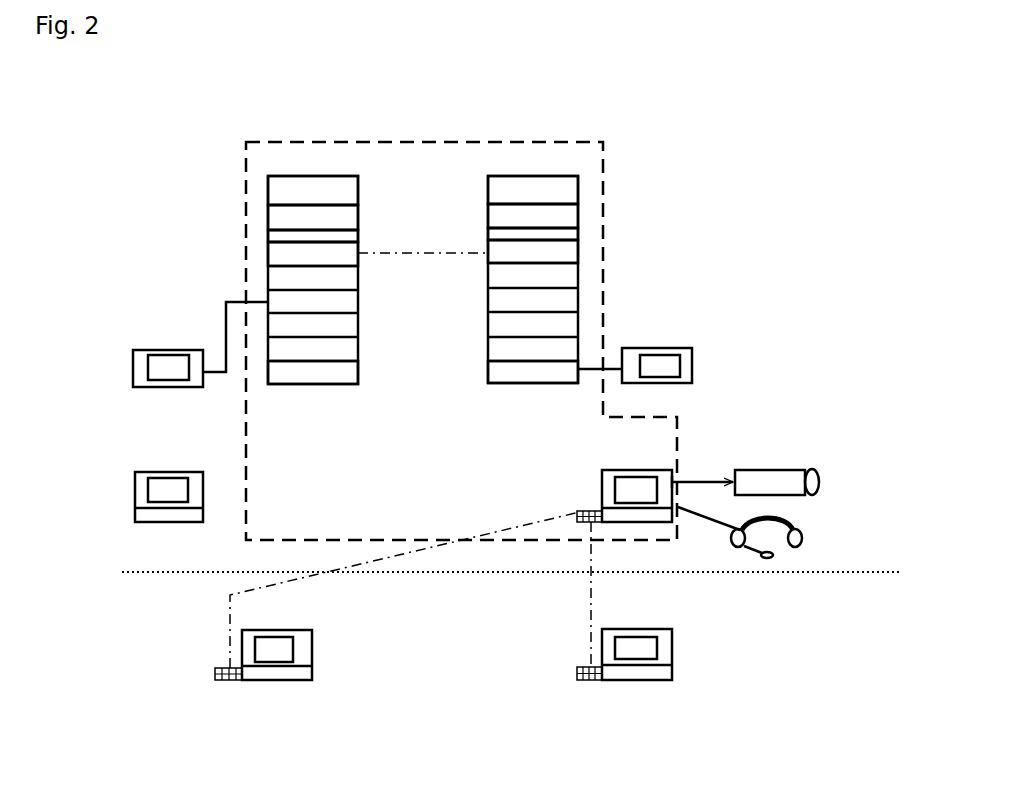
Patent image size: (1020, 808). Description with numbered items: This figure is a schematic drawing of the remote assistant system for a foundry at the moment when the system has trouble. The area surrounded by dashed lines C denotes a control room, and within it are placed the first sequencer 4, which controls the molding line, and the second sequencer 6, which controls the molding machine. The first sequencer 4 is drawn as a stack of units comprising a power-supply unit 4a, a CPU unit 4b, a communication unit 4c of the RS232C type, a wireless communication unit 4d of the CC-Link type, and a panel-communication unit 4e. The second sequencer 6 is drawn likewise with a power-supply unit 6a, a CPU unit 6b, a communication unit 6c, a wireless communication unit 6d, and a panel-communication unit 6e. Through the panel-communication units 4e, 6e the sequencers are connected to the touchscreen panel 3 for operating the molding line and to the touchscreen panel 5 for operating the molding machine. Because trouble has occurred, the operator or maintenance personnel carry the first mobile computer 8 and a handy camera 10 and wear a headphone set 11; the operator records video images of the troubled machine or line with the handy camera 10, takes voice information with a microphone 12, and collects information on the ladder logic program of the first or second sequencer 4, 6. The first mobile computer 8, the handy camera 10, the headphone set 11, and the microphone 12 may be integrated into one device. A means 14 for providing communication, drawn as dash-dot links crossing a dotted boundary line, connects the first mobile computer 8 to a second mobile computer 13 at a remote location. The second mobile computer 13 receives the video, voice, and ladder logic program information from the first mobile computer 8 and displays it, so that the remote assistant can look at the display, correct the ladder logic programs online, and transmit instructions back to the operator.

The touchscreen panel 3 is at (692, 358).
The first sequencer 4 is at (580, 170).
The power-supply unit 4a is at (578, 190).
The CPU unit 4b is at (578, 220).
The communication unit 4c is at (578, 237).
The wireless communication unit 4d is at (578, 255).
The panel-communication unit 4e is at (578, 378).
The touchscreen panel 5 is at (148, 350).
The second sequencer 6 is at (263, 181).
The power-supply unit 6a is at (268, 193).
The CPU unit 6b is at (268, 223).
The communication unit 6c is at (268, 242).
The wireless communication unit 6d is at (268, 258).
The panel-communication unit 6e is at (268, 378).
The first mobile computer 8 is at (665, 470).
The handy camera 10 is at (806, 468).
The headphone set 11 is at (802, 538).
The microphone 12 is at (779, 556).
The second mobile computer 13 is at (310, 663).
The means for providing communication 14 is at (430, 550).
The dashed lines C is at (608, 303).